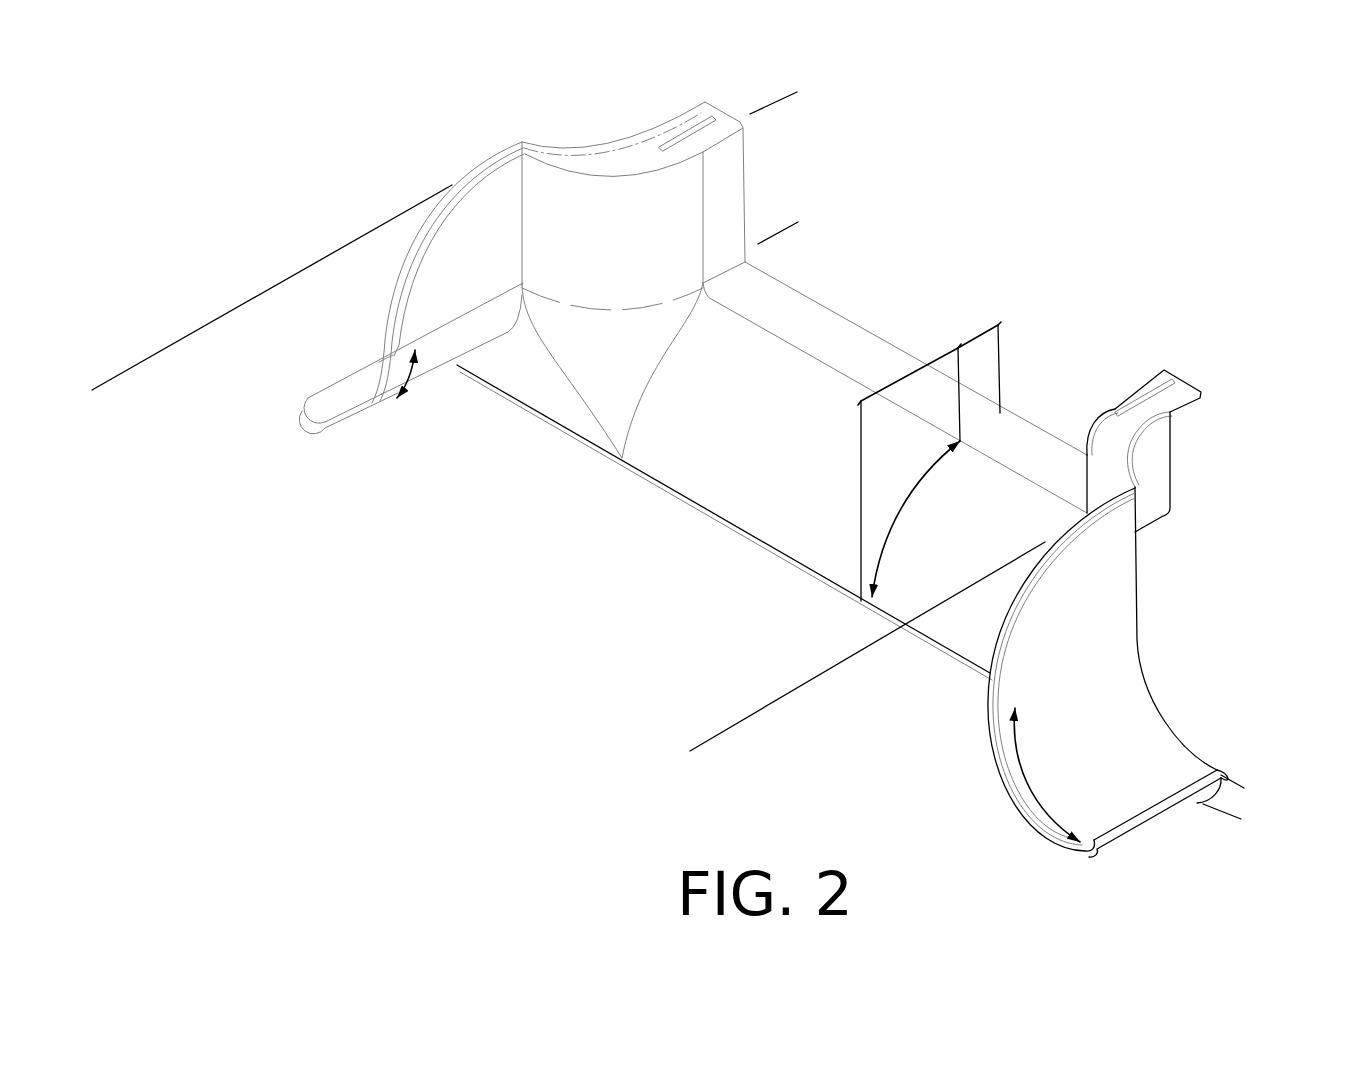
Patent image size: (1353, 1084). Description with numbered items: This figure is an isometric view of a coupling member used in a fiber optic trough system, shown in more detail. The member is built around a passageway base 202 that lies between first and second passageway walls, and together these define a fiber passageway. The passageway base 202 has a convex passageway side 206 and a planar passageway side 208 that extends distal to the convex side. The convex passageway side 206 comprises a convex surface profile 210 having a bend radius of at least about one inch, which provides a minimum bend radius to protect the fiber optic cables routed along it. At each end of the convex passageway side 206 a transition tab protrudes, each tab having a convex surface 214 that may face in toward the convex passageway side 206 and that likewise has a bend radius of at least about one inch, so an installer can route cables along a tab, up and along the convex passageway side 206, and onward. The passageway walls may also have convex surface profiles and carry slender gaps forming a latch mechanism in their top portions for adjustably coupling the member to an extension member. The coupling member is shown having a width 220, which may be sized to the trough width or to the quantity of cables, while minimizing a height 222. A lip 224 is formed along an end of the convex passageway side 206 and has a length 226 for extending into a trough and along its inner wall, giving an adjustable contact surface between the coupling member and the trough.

The passageway base 202 is at (772, 471).
The convex passageway side 206 is at (907, 375).
The planar passageway side 208 is at (975, 338).
The convex surface profile 210 is at (903, 510).
The convex surface 214 is at (412, 400).
The width 220 is at (103, 385).
The height 222 is at (778, 102).
The lip 224 is at (716, 521).
The length 226 is at (1233, 752).